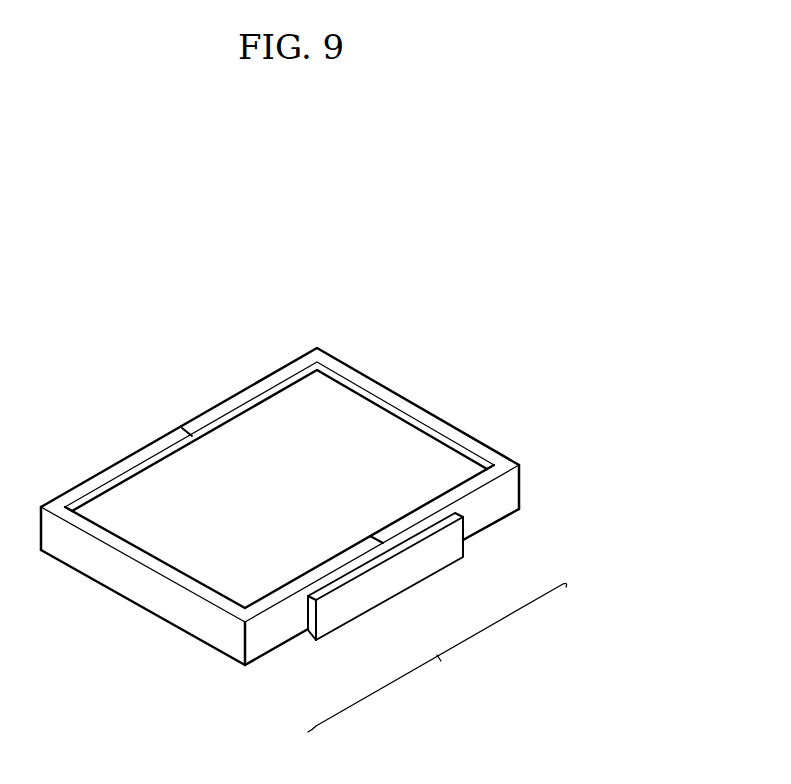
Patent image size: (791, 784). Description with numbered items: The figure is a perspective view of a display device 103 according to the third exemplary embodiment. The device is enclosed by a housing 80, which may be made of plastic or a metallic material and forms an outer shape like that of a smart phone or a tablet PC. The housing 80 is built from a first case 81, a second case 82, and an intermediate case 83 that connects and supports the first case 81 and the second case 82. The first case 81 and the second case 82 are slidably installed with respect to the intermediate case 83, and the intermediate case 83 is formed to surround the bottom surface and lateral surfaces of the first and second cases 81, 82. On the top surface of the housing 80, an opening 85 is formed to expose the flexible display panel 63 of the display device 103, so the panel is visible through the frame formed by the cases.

The display device 103 is at (247, 294).
The first case 81 is at (267, 643).
The second case 82 is at (493, 515).
The intermediate case 83 is at (368, 602).
The opening 85 is at (438, 432).
The flexible display panel 63 is at (381, 422).
The housing 80 is at (437, 657).